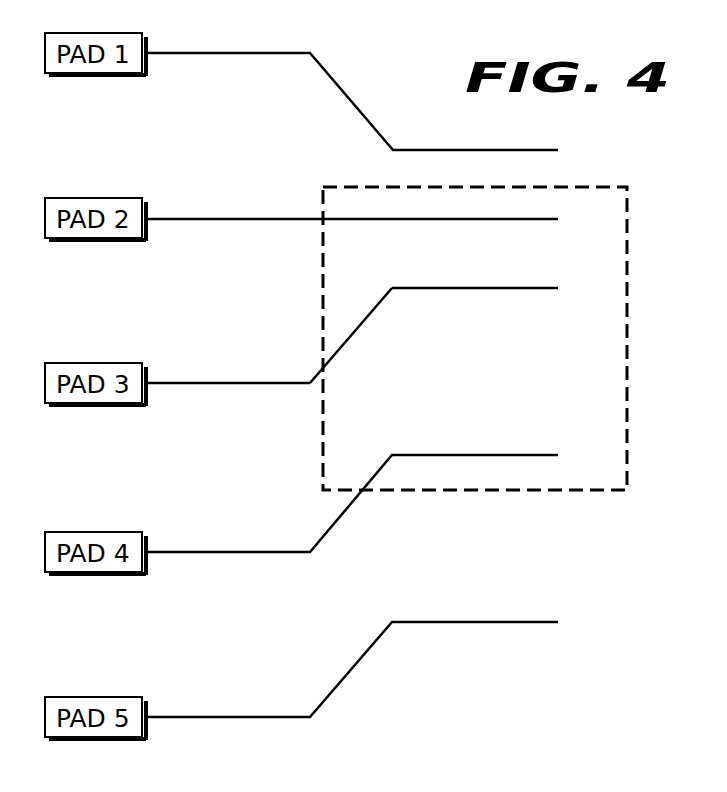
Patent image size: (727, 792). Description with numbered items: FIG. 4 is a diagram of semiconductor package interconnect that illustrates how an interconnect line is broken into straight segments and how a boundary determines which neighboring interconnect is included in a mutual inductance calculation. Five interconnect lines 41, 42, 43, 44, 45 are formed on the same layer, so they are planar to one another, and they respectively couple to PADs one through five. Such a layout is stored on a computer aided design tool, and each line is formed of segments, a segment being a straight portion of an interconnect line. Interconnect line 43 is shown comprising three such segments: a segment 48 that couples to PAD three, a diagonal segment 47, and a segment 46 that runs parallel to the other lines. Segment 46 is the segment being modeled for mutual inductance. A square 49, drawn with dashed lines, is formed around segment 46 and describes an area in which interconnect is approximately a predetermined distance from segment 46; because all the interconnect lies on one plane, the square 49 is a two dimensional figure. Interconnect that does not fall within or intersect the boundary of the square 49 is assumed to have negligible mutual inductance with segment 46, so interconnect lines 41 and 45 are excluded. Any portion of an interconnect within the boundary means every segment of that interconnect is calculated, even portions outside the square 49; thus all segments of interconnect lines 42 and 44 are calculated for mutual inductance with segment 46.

The interconnect line 41 is at (367, 83).
The interconnect line 42 is at (257, 157).
The interconnect line 43 is at (351, 311).
The interconnect line 44 is at (246, 515).
The interconnect line 45 is at (266, 685).
The segment 46 is at (480, 286).
The segment 47 is at (360, 323).
The segment 48 is at (232, 383).
The square 49 is at (578, 492).